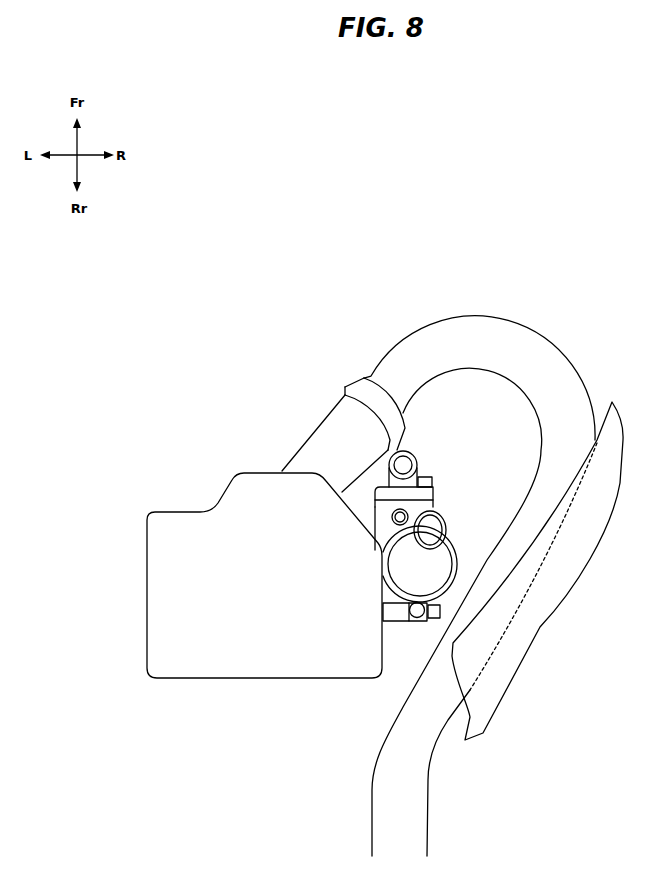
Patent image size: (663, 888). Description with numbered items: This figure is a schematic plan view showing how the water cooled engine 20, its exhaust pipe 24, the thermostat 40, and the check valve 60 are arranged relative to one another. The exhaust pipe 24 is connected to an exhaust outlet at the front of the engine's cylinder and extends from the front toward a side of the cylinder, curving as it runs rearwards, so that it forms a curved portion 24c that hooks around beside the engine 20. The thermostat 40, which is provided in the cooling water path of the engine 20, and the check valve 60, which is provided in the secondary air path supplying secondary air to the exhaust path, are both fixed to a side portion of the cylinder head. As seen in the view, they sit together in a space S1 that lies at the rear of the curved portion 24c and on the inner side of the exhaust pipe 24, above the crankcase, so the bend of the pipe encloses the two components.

The water cooled engine 20 is at (183, 510).
The exhaust pipe 24 is at (457, 563).
The curved portion 24c is at (425, 325).
The thermostat 40 is at (446, 537).
The check valve 60 is at (433, 486).
The space S1 is at (475, 422).